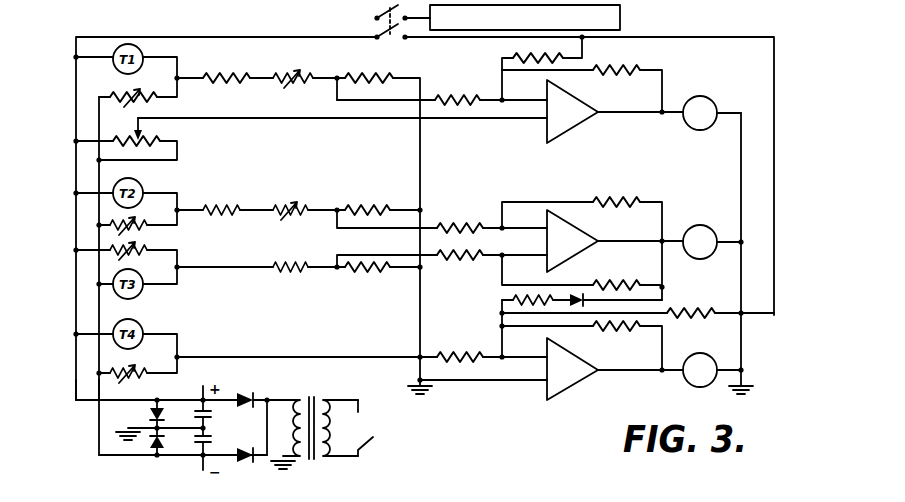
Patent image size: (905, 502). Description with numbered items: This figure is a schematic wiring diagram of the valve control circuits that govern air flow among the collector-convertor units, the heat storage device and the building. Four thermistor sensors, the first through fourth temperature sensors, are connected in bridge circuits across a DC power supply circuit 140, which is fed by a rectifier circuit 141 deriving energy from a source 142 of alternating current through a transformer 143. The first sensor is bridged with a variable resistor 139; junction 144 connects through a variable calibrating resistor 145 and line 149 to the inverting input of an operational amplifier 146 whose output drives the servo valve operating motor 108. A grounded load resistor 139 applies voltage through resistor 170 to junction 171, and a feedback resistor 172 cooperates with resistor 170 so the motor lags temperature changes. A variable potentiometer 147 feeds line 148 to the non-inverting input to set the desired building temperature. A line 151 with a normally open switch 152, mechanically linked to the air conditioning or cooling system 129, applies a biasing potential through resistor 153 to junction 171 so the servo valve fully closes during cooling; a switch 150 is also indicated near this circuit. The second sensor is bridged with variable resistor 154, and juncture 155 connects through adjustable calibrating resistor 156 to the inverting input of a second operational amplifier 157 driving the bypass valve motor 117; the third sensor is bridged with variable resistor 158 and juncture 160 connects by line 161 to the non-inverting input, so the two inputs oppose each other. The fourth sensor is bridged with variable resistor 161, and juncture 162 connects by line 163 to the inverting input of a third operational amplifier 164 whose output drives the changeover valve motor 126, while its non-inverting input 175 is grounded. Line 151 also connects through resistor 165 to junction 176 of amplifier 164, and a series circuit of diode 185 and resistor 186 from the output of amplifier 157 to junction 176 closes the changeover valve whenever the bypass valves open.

The servo valve operating motor 108 is at (712, 104).
The bypass valve motor 117 is at (718, 222).
The changeover valve motor 126 is at (715, 352).
The air conditioning or cooling system 129 is at (626, 20).
The variable resistor / load resistor 139 is at (122, 94).
The DC power supply circuit 140 is at (97, 392).
The rectifier circuit 141 is at (247, 392).
The source of alternating current 142 is at (366, 447).
The transformer 143 is at (311, 398).
The junction 144 is at (180, 78).
The variable calibrating resistor 145 is at (296, 70).
The operational amplifier 146 is at (615, 111).
The variable potentiometer 147 is at (165, 142).
The line 148 is at (318, 130).
The line 149 is at (335, 103).
The switch 150 is at (167, 5).
The line 151 is at (334, 22).
The normally open switch 152 is at (375, 20).
The resistor 153 is at (502, 58).
The variable resistor 154 is at (148, 226).
The juncture 155 is at (182, 207).
The adjustable calibrating resistor 156 is at (274, 186).
The second operational amplifier 157 is at (592, 248).
The variable resistor 158 is at (150, 251).
The juncture 160 is at (180, 270).
The variable resistor / line 161 is at (150, 379).
The juncture 162 is at (180, 357).
The line 163 is at (395, 345).
The third operational amplifier 164 is at (615, 369).
The resistor 165 is at (688, 313).
The resistor 170 is at (446, 94).
The junction 171 is at (505, 92).
The feedback resistor 172 is at (640, 70).
The non-inverting input 175 is at (540, 383).
The junction 176 is at (502, 352).
The diode 185 is at (585, 294).
The resistor 186 is at (502, 300).